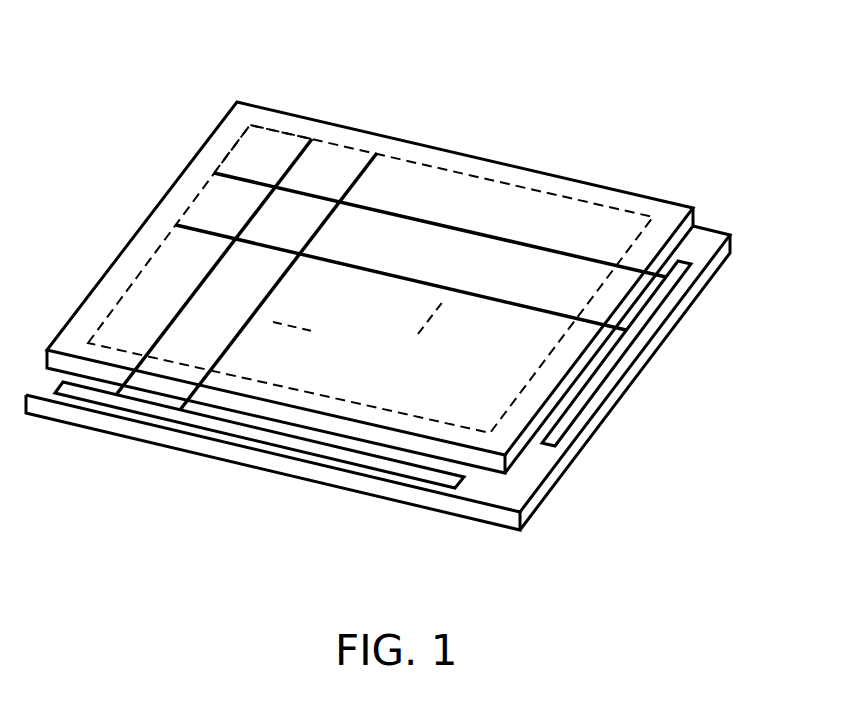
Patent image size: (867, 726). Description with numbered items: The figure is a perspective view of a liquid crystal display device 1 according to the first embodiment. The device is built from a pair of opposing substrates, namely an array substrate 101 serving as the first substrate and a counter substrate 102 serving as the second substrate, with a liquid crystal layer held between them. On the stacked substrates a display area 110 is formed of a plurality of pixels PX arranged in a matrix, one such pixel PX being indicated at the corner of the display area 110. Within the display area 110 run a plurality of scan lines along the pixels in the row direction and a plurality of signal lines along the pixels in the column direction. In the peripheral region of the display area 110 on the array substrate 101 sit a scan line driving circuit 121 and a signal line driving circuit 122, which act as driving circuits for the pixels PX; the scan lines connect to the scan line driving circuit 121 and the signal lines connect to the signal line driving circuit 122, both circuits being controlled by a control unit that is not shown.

The display device 1 is at (384, 269).
The array substrate 101 is at (711, 230).
The counter substrate 102 is at (605, 188).
The display area 110 is at (449, 170).
The pixel PX is at (267, 136).
The scan line driving circuit 121 is at (625, 346).
The signal line driving circuit 122 is at (260, 433).